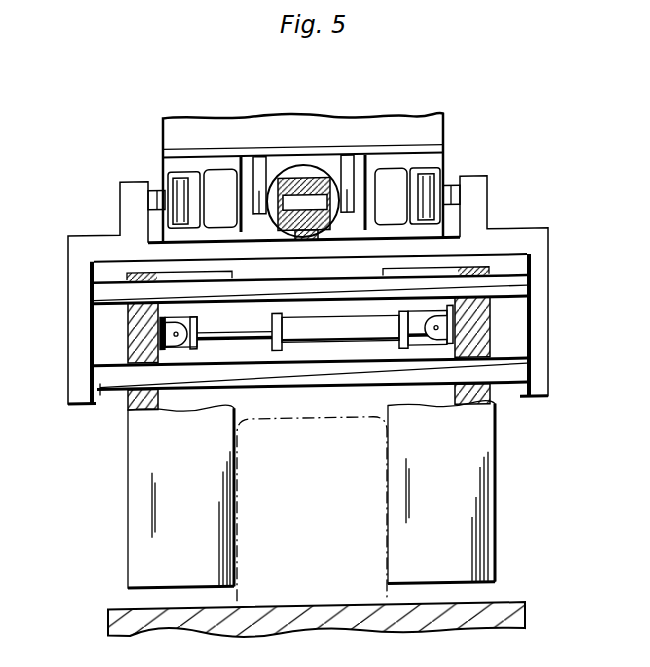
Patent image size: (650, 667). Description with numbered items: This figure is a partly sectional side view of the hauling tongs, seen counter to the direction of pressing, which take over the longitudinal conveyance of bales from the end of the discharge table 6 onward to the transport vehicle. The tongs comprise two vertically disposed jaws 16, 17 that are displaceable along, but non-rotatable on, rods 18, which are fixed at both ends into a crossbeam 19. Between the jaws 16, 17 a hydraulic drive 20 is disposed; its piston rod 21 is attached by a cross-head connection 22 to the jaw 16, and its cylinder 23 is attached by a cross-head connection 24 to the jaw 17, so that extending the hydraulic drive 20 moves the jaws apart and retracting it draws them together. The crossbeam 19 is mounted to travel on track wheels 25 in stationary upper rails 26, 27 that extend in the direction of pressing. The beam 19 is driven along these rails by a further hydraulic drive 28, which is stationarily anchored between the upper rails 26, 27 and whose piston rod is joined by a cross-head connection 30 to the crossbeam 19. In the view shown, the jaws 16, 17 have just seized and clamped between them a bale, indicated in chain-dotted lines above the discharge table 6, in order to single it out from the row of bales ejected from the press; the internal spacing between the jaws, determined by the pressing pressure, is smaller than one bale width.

The discharge table 6 is at (527, 612).
The jaw 16 is at (150, 527).
The jaw 17 is at (470, 528).
The rods 18 is at (178, 348).
The crossbeam 19 is at (78, 291).
The hydraulic drive 20 is at (356, 330).
The piston rod 21 is at (224, 343).
The cross-head connection 22 is at (150, 352).
The cylinder 23 is at (388, 345).
The cross-head connection 24 is at (482, 336).
The track wheels 25 is at (176, 193).
The upper rail 26 is at (197, 167).
The upper rail 27 is at (403, 160).
The hydraulic drive 28 is at (308, 172).
The cross-head connection 30 is at (254, 190).